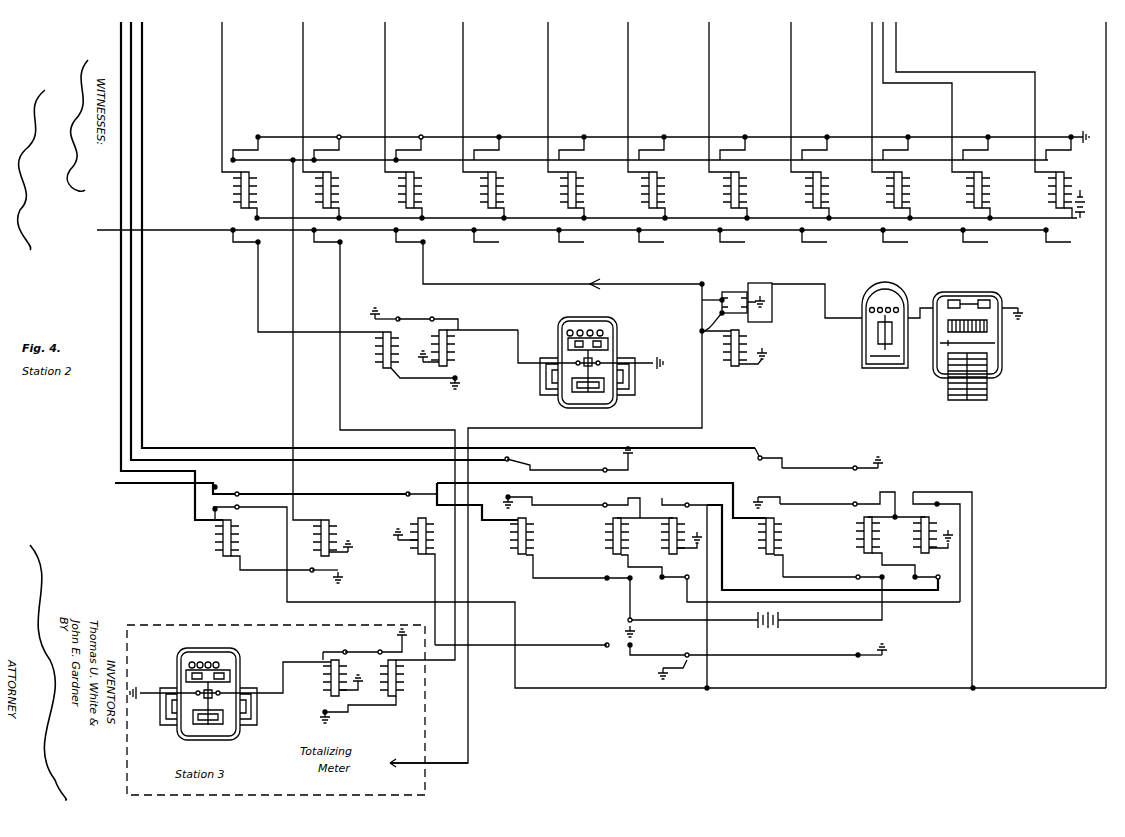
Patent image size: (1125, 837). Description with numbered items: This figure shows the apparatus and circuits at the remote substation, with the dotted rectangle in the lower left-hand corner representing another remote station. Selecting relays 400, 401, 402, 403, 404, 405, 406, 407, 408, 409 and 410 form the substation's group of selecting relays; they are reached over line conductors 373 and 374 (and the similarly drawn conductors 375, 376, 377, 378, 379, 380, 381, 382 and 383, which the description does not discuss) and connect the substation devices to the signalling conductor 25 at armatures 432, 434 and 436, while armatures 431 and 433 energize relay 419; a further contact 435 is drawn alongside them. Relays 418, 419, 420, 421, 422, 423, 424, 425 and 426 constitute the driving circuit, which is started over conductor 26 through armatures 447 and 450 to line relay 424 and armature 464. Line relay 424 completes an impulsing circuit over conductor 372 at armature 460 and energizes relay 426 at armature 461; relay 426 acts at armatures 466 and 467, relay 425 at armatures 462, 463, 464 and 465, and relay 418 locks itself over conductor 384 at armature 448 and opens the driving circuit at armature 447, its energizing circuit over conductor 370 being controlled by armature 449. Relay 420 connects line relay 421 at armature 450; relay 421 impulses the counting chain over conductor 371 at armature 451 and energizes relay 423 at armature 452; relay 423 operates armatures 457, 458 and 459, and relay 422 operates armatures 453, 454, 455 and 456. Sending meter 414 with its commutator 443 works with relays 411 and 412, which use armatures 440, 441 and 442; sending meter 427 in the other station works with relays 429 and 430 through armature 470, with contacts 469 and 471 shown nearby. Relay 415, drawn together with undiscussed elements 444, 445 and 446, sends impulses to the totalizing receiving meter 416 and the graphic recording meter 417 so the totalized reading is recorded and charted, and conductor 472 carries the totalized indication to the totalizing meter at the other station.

The signalling conductor 25 is at (103, 222).
The conductor 26 is at (120, 487).
The conductor 370 is at (121, 45).
The conductor 371 is at (131, 65).
The conductor 372 is at (142, 86).
The conductor 373 is at (222, 38).
The conductor 374 is at (303, 38).
The line conductor 375 is at (385, 38).
The line conductor 376 is at (463, 38).
The line conductor 377 is at (548, 38).
The line conductor 378 is at (628, 44).
The line conductor 379 is at (709, 44).
The line conductor 380 is at (791, 38).
The line conductor 381 is at (872, 36).
The line conductor 382 is at (883, 55).
The line conductor 383 is at (896, 38).
The conductor 384 is at (1106, 36).
The selecting relay 400 is at (237, 197).
The selecting relay 401 is at (339, 200).
The selecting relay 402 is at (422, 200).
The selecting relay 403 is at (504, 200).
The selecting relay 404 is at (584, 200).
The selecting relay 405 is at (665, 200).
The selecting relay 406 is at (747, 200).
The selecting relay 407 is at (829, 200).
The selecting relay 408 is at (910, 200).
The selecting relay 409 is at (990, 196).
The selecting relay 410 is at (1048, 200).
The sending relay 411 is at (383, 366).
The relay 412 is at (453, 340).
The sending meter 414 is at (612, 325).
The relay 415 is at (742, 368).
The totalizing receiving meter 416 is at (885, 294).
The graphic recording meter 417 is at (962, 293).
The relay 418 is at (215, 545).
The relay 419 is at (322, 548).
The relay 420 is at (416, 548).
The line relay 421 is at (527, 550).
The relay 422 is at (613, 545).
The relay 423 is at (669, 550).
The line relay 424 is at (766, 545).
The relay 425 is at (864, 540).
The relay 426 is at (921, 545).
The sending meter 427 is at (177, 660).
The relay 429 is at (331, 670).
The relay 430 is at (395, 698).
The armature 431 is at (250, 142).
The armature 432 is at (248, 245).
The armature 433 is at (332, 143).
The armature 434 is at (330, 245).
The relay contact 435 is at (414, 143).
The armature 436 is at (413, 246).
The armature 440 is at (393, 315).
The armature 441 is at (440, 316).
The armature 442 is at (448, 383).
The commutator 443 is at (594, 362).
The relay 444 is at (736, 290).
The conductor 445 is at (702, 300).
The conductor 446 is at (702, 329).
The armature 447 is at (240, 492).
The armature 448 is at (240, 510).
The armature 449 is at (310, 575).
The armature 450 is at (415, 486).
The armature 451 is at (530, 466).
The armature 452 is at (532, 500).
The armature 453 is at (630, 467).
The armature 454 is at (605, 505).
The armature 455 is at (605, 582).
The armature 456 is at (607, 643).
The armature 457 is at (688, 497).
The armature 458 is at (682, 580).
The armature 459 is at (684, 656).
The armature 460 is at (782, 460).
The armature 461 is at (770, 496).
The armature 462 is at (875, 460).
The armature 463 is at (858, 502).
The armature 464 is at (857, 575).
The armature 465 is at (860, 652).
The armature 466 is at (937, 500).
The armature 467 is at (938, 575).
The relay contact 469 is at (340, 650).
The armature 470 is at (330, 722).
The relay contact 471 is at (383, 650).
The conductor 472 is at (392, 760).